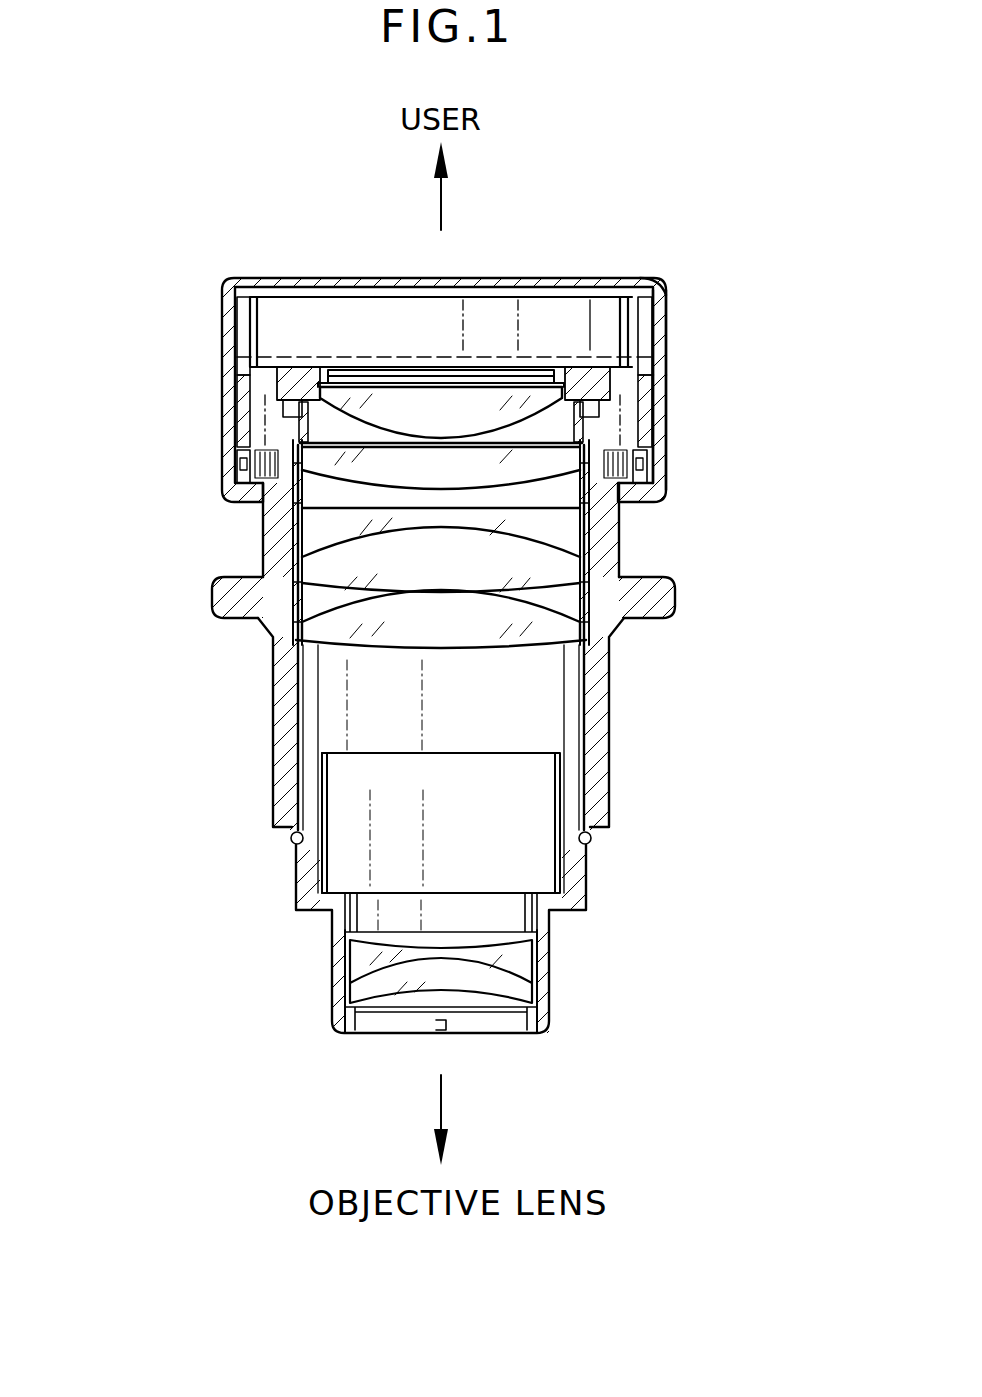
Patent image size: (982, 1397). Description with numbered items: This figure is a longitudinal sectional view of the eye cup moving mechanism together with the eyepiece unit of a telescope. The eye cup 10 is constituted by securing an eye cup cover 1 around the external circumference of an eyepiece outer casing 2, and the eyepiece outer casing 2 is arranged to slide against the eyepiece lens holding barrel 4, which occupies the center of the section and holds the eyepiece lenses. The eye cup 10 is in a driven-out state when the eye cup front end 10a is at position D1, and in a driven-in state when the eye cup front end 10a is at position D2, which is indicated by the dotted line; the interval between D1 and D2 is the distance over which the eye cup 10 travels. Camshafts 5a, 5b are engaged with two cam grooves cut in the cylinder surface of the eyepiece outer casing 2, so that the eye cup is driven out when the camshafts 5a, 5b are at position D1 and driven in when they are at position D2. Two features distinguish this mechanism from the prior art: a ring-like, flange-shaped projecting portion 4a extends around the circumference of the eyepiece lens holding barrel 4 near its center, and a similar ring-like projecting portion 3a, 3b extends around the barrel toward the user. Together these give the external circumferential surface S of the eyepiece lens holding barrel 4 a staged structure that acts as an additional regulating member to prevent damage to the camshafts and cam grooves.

The eye cup 10 is at (785, 266).
The eye cup front end 10a is at (662, 274).
The eye cup cover 1 is at (660, 307).
The eyepiece outer casing 2 is at (660, 385).
The ring-like projecting portion 3a is at (665, 441).
The ring-like projecting portion 3b is at (250, 412).
The camshaft 5a is at (665, 467).
The camshaft 5b is at (237, 480).
The eyepiece lens holding barrel 4 is at (610, 525).
The ring-like projecting portion 4a is at (662, 603).
The external circumferential surface S is at (255, 538).
The position D1 is at (208, 279).
The position D2 is at (208, 357).